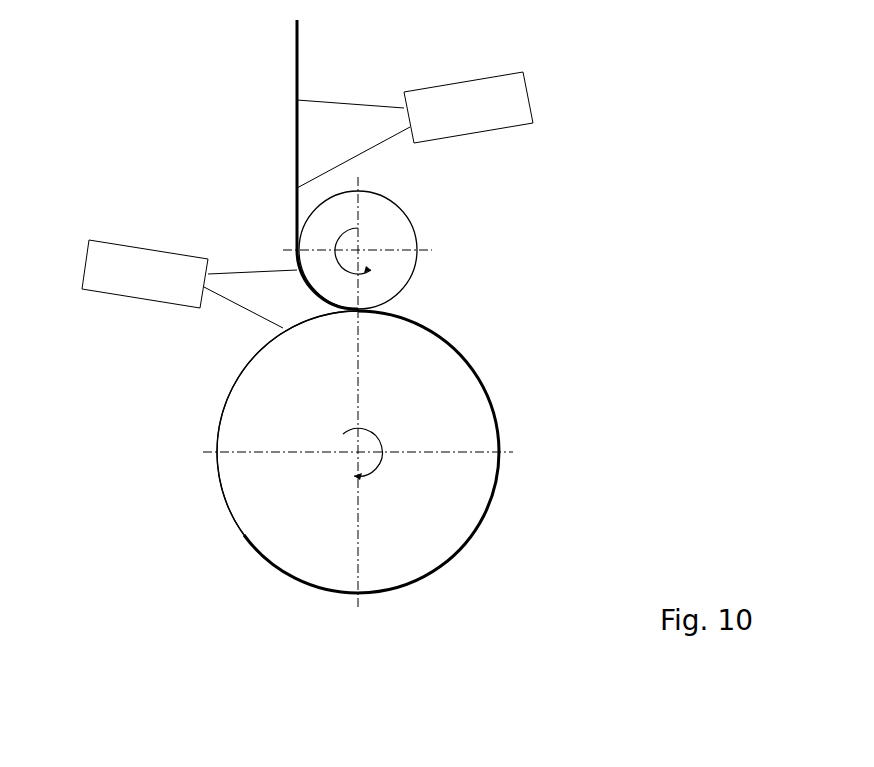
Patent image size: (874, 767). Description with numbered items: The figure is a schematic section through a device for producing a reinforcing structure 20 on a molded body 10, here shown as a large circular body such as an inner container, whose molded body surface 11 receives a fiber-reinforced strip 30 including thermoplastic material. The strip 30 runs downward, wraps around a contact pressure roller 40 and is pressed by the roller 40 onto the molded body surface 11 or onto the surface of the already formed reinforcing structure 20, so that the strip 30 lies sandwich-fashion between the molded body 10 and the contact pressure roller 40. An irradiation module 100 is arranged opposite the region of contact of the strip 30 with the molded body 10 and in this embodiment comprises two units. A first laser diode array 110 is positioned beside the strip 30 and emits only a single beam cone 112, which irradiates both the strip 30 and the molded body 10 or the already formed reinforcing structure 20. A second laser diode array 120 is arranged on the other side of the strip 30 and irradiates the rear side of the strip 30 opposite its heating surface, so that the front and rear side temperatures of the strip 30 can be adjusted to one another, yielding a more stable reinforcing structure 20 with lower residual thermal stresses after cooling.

The molded body 10 is at (413, 382).
The molded body surface 11 is at (237, 380).
The reinforcing structure 20 is at (457, 550).
The fiber-reinforced strip 30 is at (295, 66).
The contact pressure roller 40 is at (397, 240).
The irradiation module 100 is at (293, 167).
The first laser diode array 110 is at (138, 263).
The second laser diode array 120 is at (440, 106).
The beam cone 112 is at (330, 132).